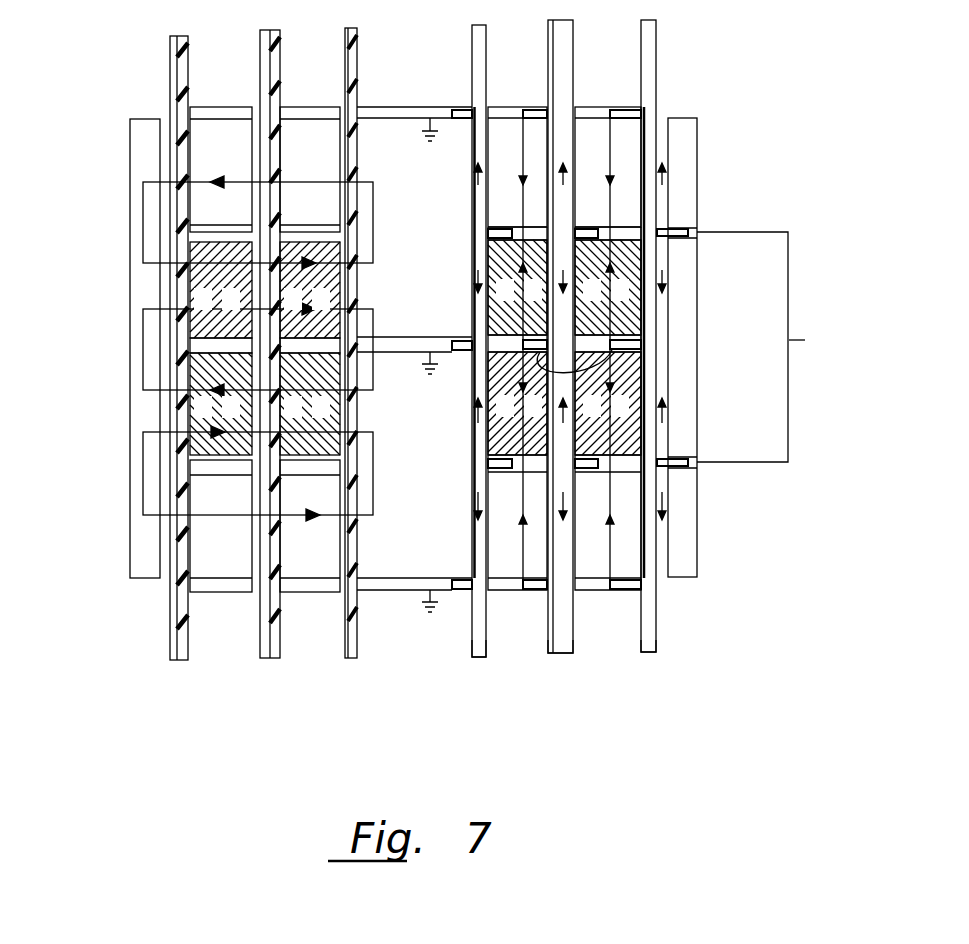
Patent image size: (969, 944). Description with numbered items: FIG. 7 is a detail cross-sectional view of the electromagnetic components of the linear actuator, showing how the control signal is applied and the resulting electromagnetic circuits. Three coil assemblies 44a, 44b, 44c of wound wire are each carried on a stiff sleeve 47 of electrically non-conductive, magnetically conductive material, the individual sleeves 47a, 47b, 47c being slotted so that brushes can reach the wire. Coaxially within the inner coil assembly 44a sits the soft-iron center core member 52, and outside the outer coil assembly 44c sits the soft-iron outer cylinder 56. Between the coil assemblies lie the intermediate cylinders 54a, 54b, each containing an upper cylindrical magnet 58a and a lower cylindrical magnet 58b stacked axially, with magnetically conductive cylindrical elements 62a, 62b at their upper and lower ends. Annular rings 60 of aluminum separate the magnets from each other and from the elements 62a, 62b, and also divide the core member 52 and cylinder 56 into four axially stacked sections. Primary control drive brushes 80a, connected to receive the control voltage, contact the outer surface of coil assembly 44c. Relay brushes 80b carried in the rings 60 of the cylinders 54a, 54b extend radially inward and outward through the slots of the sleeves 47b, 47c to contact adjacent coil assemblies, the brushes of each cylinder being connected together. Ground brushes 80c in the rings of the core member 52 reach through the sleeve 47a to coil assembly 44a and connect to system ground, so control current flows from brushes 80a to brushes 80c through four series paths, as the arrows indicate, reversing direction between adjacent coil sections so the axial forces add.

The stiff sleeve 47 is at (182, 42).
The sleeve of inner coil assembly 47a is at (473, 645).
The sleeve of intermediate coil assembly 47b is at (549, 645).
The sleeve of outer coil assembly 47c is at (641, 645).
The inner coil assembly 44a is at (472, 37).
The intermediate coil assembly 44b is at (548, 36).
The outer coil assembly 44c is at (641, 36).
The center core member 52 is at (390, 130).
The intermediate cylinder 54a is at (278, 125).
The intermediate cylinder 54b is at (190, 118).
The outer cylinder 56 is at (130, 150).
The upper cylindrical magnet 58a is at (495, 262).
The lower cylindrical magnet 58b is at (495, 405).
The annular ring 60 is at (412, 107).
The upper cylindrical element 62a is at (497, 192).
The lower cylindrical element 62b is at (498, 497).
The primary control drive brush 80a is at (673, 227).
The relay brush 80b is at (547, 110).
The ground brush 80c is at (465, 110).